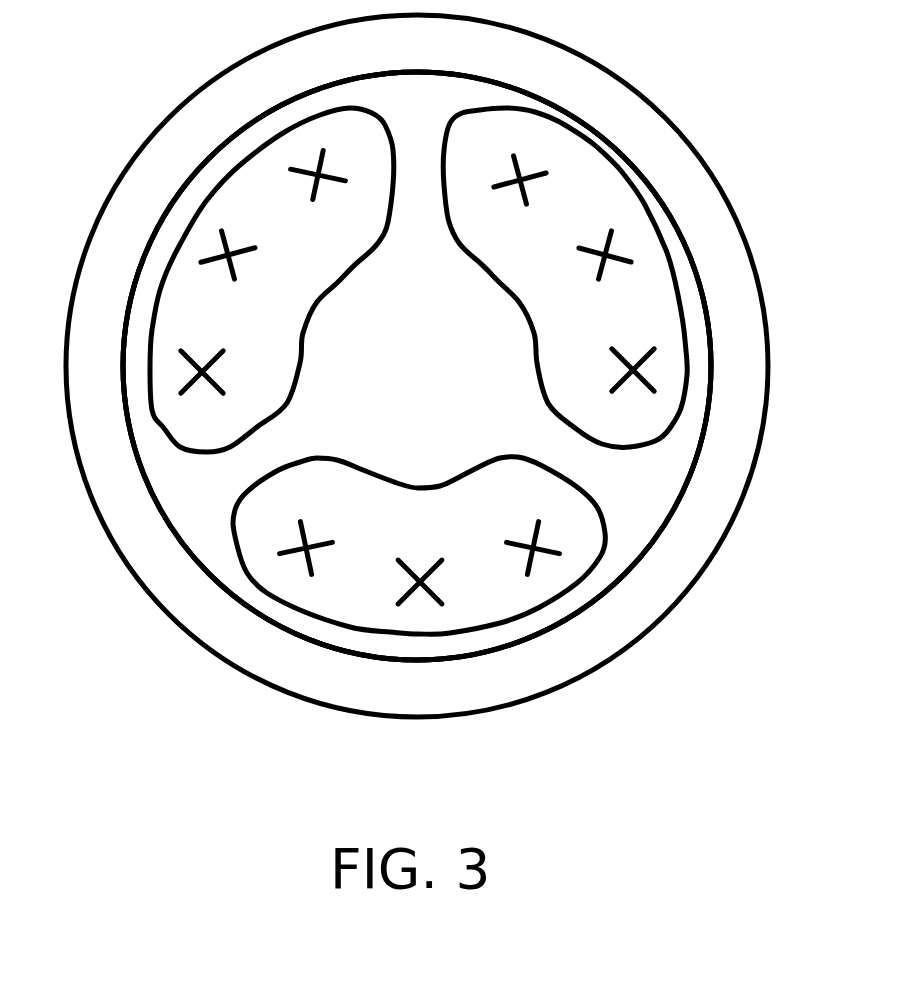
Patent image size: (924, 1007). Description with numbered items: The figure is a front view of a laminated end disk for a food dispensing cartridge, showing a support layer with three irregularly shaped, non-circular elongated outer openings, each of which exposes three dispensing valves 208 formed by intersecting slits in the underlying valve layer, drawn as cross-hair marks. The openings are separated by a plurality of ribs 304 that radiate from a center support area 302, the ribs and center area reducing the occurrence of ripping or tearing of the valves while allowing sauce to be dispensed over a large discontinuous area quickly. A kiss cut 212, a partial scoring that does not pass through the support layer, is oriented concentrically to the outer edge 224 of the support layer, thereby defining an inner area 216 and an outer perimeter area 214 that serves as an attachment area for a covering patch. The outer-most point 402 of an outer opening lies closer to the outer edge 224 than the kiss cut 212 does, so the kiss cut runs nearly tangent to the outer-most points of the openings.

The dispensing valve 208 is at (548, 168).
The kiss cut 212 is at (712, 400).
The outer perimeter area 214 is at (720, 480).
The inner area 216 is at (647, 492).
The outer edge 224 is at (720, 547).
The center support area 302 is at (300, 280).
The rib 304 is at (577, 462).
The outer-most point 402 is at (413, 633).